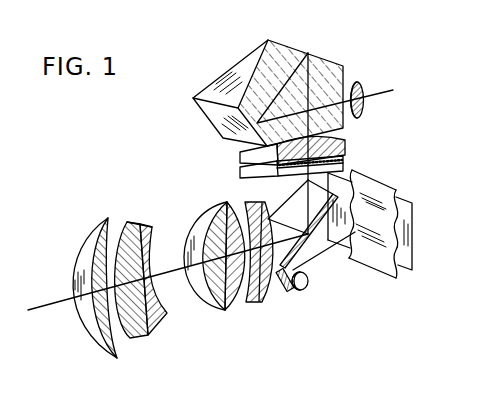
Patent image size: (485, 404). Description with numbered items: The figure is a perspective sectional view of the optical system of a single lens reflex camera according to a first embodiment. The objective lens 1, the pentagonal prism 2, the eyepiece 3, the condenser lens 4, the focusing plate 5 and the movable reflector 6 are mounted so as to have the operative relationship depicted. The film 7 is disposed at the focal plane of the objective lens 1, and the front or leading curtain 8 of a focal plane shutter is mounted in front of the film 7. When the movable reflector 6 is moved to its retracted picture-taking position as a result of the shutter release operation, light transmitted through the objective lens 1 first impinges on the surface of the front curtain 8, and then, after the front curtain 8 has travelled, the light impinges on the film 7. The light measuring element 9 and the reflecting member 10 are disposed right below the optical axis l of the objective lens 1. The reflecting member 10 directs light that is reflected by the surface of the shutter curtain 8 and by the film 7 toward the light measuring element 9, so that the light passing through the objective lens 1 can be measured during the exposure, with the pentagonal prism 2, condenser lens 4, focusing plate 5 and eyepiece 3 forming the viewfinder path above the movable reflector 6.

The objective lens 1 is at (280, 297).
The pentagonal prism 2 is at (328, 60).
The eyepiece 3 is at (363, 109).
The condenser lens 4 is at (346, 142).
The focusing plate 5 is at (347, 162).
The movable reflector 6 is at (288, 210).
The film 7 is at (407, 257).
The front curtain 8 is at (383, 211).
The light measuring element 9 is at (309, 284).
The reflecting member 10 is at (289, 293).
The optical axis l is at (46, 314).